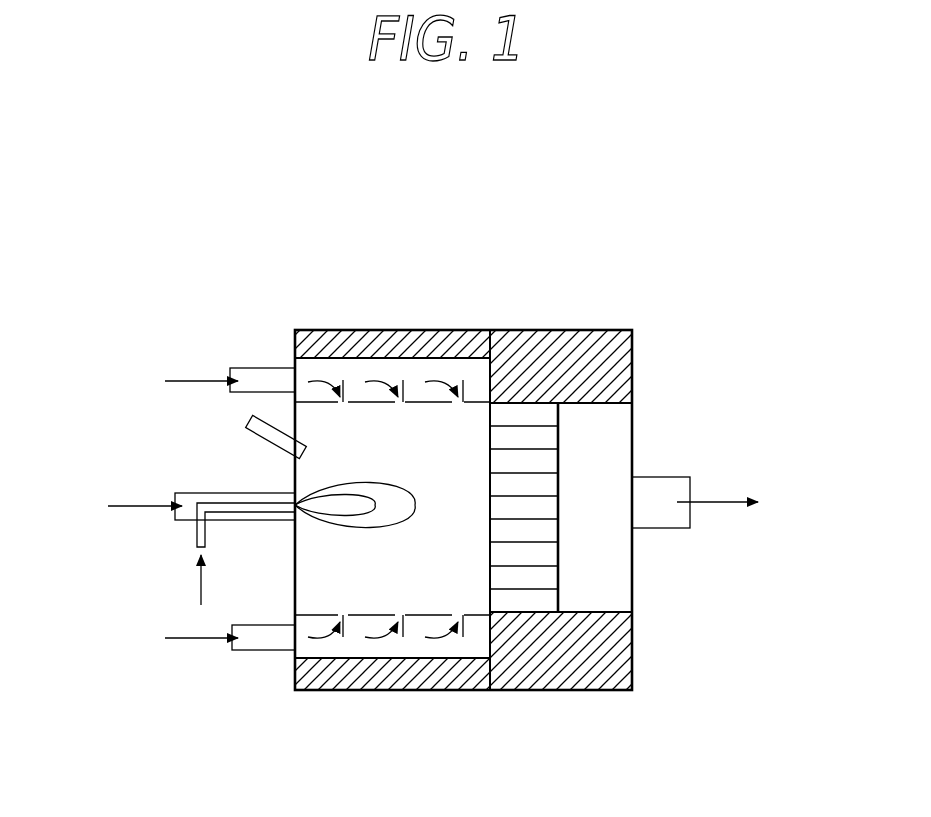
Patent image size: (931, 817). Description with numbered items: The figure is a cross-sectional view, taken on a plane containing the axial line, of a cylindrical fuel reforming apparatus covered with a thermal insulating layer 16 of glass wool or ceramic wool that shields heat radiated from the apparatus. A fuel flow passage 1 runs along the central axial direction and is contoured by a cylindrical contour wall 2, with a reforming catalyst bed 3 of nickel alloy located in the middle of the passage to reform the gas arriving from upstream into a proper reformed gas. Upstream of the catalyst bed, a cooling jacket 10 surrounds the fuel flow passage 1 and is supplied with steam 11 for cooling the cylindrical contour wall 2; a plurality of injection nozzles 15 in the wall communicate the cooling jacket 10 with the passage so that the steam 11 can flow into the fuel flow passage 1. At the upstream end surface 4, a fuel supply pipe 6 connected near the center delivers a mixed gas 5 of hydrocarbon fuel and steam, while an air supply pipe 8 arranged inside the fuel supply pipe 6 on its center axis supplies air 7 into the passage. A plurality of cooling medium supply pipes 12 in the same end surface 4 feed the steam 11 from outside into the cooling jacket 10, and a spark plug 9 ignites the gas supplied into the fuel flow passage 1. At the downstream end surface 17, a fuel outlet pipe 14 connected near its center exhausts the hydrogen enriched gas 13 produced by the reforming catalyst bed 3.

The fuel flow passage 1 is at (460, 518).
The cylindrical contour wall 2 is at (610, 403).
The reforming catalyst bed 3 is at (550, 466).
The end surface 4 is at (295, 462).
The mixed gas 5 is at (120, 510).
The fuel supply pipe 6 is at (175, 495).
The air 7 is at (200, 588).
The air supply pipe 8 is at (197, 530).
The spark plug 9 is at (250, 430).
The cooling jacket 10 is at (372, 372).
The steam 11 is at (185, 375).
The cooling medium supply pipe 12 is at (258, 368).
The hydrogen enriched gas 13 is at (720, 500).
The fuel outlet pipe 14 is at (686, 528).
The injection nozzle 15 is at (343, 380).
The thermal insulating layer 16 is at (578, 345).
The end surface 17 is at (632, 567).